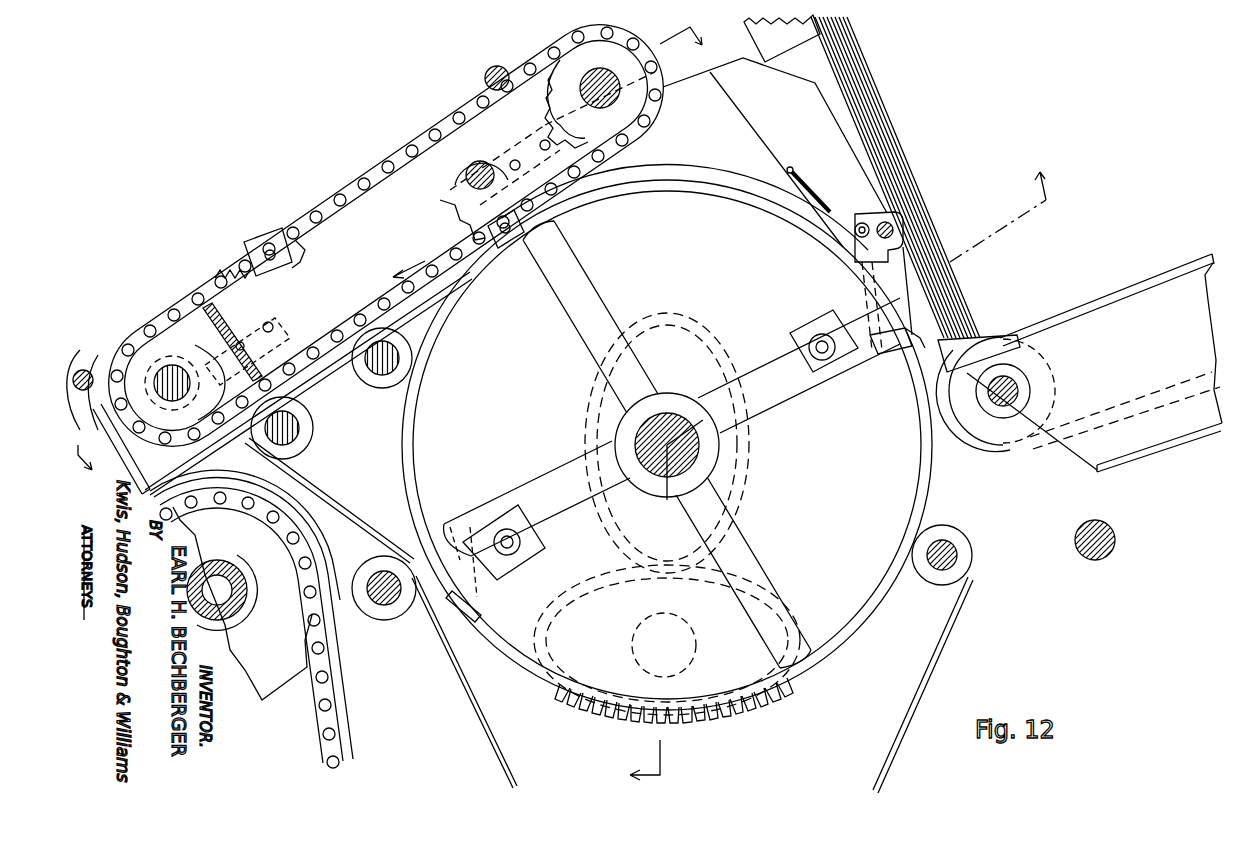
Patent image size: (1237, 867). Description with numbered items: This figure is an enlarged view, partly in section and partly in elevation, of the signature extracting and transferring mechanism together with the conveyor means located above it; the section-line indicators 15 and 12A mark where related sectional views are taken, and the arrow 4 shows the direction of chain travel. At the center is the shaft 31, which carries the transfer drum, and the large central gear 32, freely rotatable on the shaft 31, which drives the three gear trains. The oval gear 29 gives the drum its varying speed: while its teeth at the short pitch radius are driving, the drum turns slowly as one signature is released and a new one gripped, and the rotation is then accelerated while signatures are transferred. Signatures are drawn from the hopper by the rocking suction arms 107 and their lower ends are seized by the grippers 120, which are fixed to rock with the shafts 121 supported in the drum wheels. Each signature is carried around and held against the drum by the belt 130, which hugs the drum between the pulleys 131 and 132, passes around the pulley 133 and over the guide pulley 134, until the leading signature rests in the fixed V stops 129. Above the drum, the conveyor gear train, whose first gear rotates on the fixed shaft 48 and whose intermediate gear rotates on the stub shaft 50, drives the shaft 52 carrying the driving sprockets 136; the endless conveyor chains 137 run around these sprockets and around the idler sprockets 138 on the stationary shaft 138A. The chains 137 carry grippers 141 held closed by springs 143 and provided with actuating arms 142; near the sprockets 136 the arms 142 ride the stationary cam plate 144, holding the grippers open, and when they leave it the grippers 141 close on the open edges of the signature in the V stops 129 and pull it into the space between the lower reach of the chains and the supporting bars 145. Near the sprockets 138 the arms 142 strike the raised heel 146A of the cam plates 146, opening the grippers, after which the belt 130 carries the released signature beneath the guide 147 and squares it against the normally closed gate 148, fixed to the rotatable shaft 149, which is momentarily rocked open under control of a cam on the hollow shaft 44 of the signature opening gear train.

The direction of chain travel arrow 4 is at (409, 263).
The section line 15 is at (818, 465).
The section line 12A is at (393, 260).
The oval gear 29 is at (805, 612).
The shaft 31 is at (665, 425).
The central gear 32 is at (682, 316).
The hollow shaft 44 is at (228, 575).
The fixed shaft 48 is at (466, 180).
The stub shaft 50 is at (495, 70).
The shaft 52 is at (600, 70).
The rocking suction arms 107 is at (879, 243).
The grippers 120 is at (876, 366).
The shafts 121 is at (822, 347).
The V stops 129 is at (830, 225).
The belt 130 is at (962, 585).
The pulley 131 is at (945, 540).
The pulley 132 is at (392, 388).
The pulley 133 is at (298, 440).
The guide pulley 134 is at (378, 618).
The driving sprockets 136 is at (548, 106).
The conveyor chains 137 is at (350, 186).
The idler sprockets 138 is at (203, 310).
The stationary shaft 138A is at (172, 378).
The grippers 141 is at (512, 240).
The actuating arms 142 is at (455, 205).
The springs 143 is at (222, 272).
The cam plate 144 is at (505, 158).
The supporting bars 145 is at (318, 372).
The cam plates 146 is at (249, 351).
The raised heel 146A is at (228, 452).
The guide 147 is at (150, 478).
The gate 148 is at (98, 372).
The rotatable shaft 149 is at (72, 362).